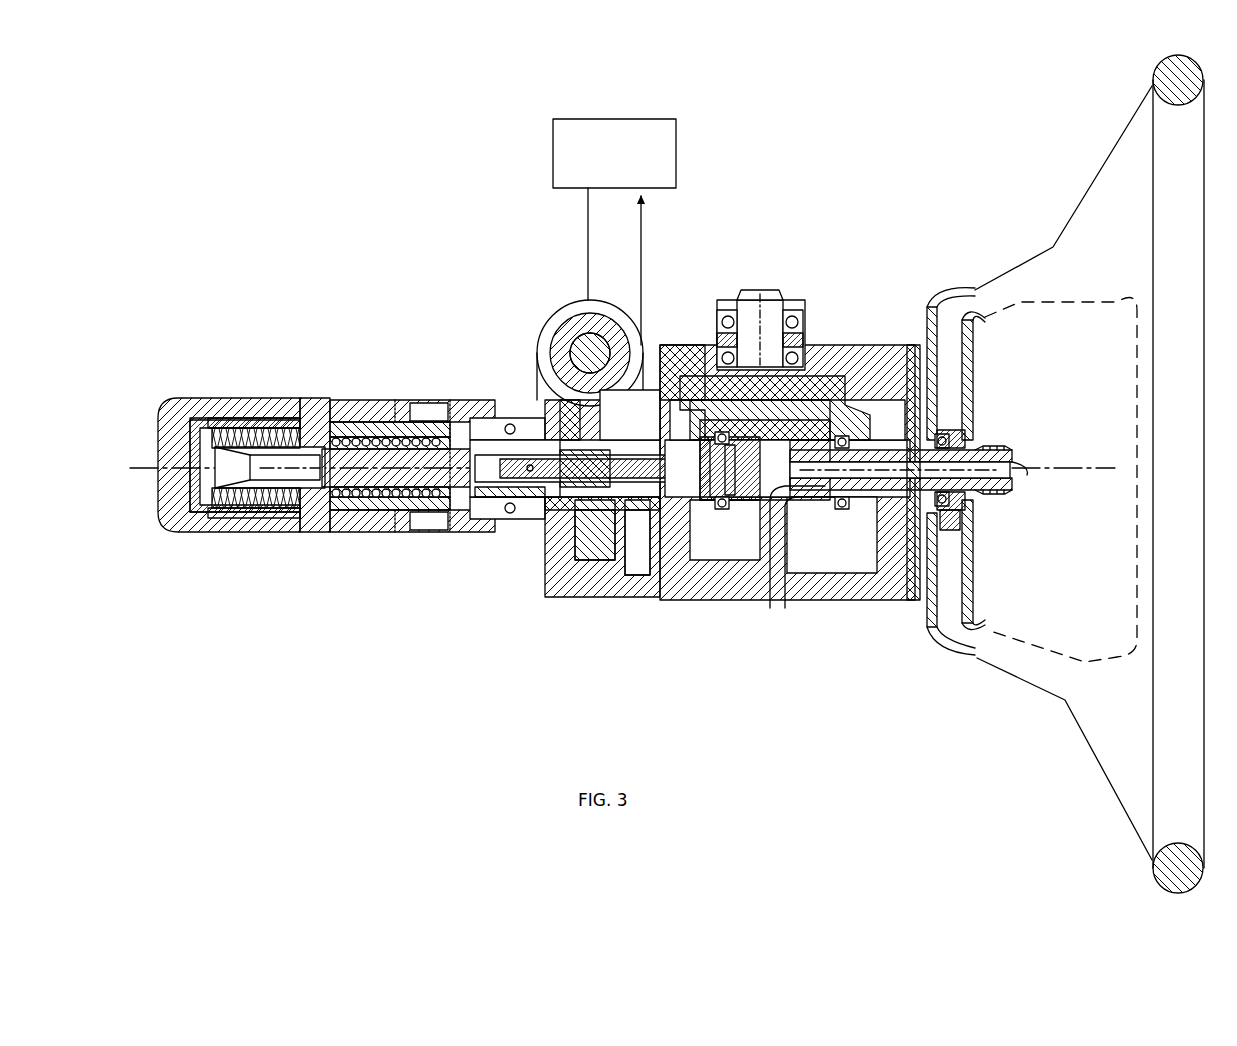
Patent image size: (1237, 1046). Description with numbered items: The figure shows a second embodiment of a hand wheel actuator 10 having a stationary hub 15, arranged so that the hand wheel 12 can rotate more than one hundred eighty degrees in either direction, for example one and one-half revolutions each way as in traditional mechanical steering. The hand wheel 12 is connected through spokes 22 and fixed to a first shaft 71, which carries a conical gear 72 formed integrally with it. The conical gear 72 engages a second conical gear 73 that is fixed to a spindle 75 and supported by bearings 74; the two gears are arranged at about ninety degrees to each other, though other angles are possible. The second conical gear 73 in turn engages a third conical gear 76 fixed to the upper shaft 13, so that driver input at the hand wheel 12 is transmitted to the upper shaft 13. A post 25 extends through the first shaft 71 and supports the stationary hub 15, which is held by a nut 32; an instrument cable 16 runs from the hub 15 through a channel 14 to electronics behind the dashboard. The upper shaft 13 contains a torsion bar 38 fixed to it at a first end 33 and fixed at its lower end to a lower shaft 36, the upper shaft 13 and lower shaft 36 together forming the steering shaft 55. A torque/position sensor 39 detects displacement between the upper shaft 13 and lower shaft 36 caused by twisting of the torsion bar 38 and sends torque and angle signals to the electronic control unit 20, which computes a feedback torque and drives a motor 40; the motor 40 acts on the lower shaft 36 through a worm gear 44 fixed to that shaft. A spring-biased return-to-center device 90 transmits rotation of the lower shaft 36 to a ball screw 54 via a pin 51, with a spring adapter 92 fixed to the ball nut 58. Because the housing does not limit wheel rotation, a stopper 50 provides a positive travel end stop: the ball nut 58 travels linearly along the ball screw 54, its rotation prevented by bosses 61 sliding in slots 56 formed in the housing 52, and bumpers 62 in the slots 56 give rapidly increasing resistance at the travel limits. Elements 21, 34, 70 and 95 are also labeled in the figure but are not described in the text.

The hand wheel actuator 10 is at (498, 134).
The hand wheel 12 is at (1153, 180).
The upper shaft 13 is at (693, 582).
The channel 14 is at (923, 440).
The stationary hub 15 is at (1052, 290).
The instrument cable 16 is at (818, 582).
The electronic control unit 20 is at (672, 119).
The cover member 21 is at (957, 433).
The spokes 22 is at (945, 640).
The post 25 is at (907, 582).
The nut 32 is at (995, 498).
The first end of upper shaft 33 is at (760, 582).
The seal 34 is at (965, 555).
The lower shaft 36 is at (512, 535).
The torsion bar 38 is at (618, 582).
The torque/position sensor 39 is at (637, 582).
The motor 40 is at (538, 398).
The worm gear 44 is at (568, 583).
The stopper 50 is at (380, 340).
The pin 51 is at (497, 405).
The housing 52 is at (190, 535).
The ball screw 54 is at (360, 400).
The steering shaft 55 is at (540, 427).
The slots 56 is at (455, 402).
The ball nut 58 is at (376, 535).
The bosses 61 is at (432, 402).
The bumpers 62 is at (405, 402).
The reduction gear unit 70 is at (812, 208).
The first shaft 71 is at (893, 347).
The conical gear 72 is at (878, 410).
The second conical gear 73 is at (790, 380).
The bearings 74 is at (728, 318).
The spindle 75 is at (753, 292).
The third conical gear 76 is at (667, 380).
The return-to-center device 90 is at (238, 340).
The spring adapter 92 is at (322, 533).
The piston 95 is at (233, 533).